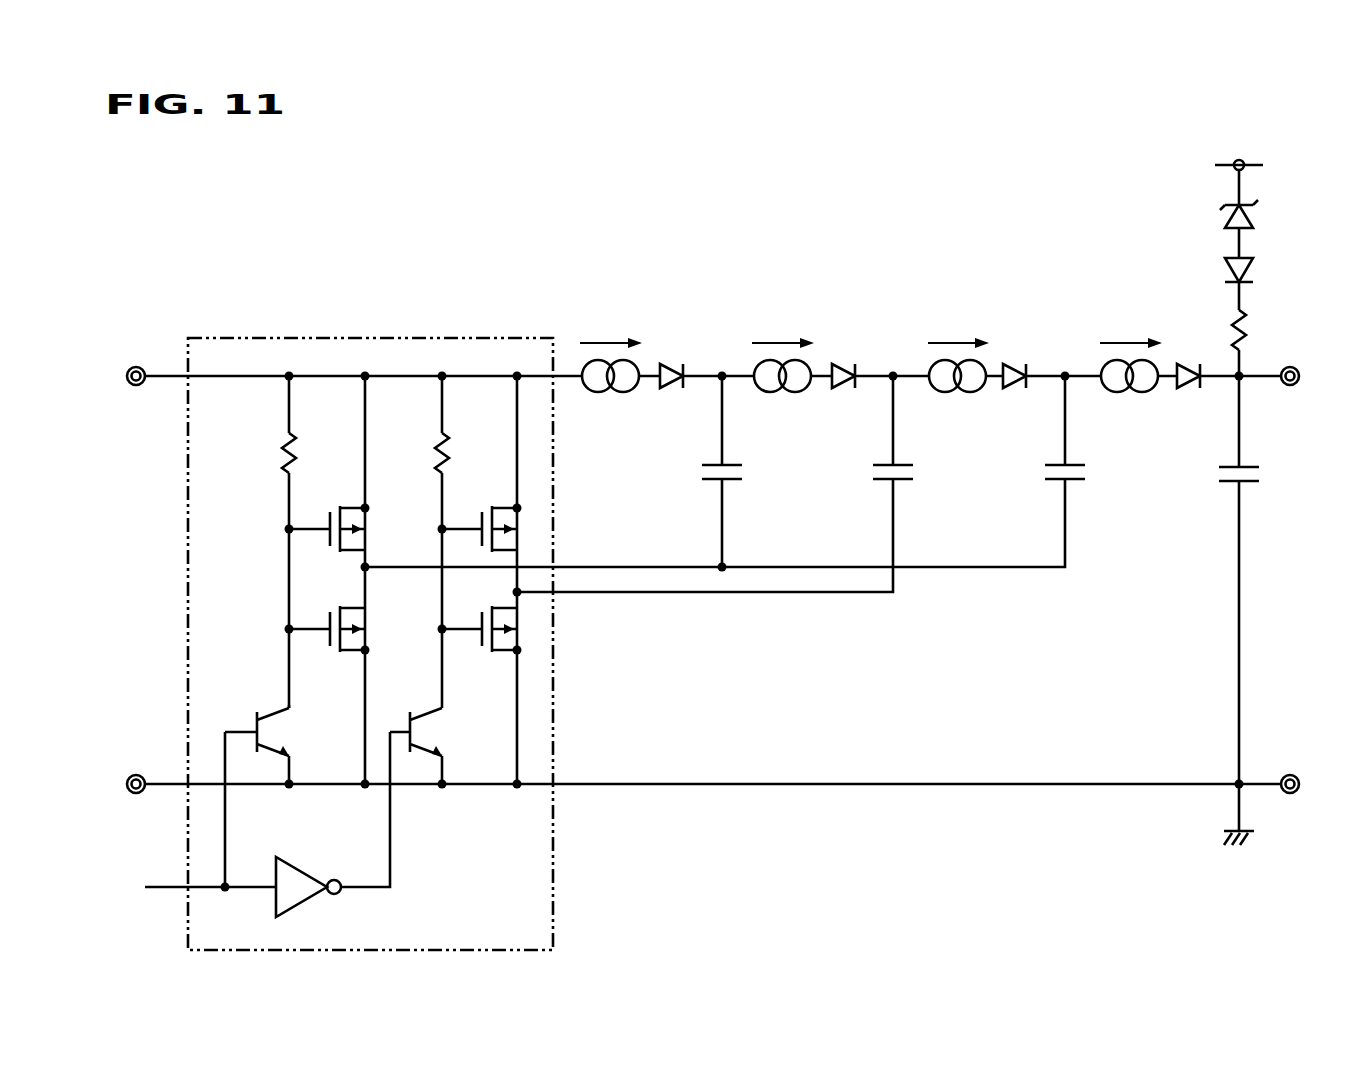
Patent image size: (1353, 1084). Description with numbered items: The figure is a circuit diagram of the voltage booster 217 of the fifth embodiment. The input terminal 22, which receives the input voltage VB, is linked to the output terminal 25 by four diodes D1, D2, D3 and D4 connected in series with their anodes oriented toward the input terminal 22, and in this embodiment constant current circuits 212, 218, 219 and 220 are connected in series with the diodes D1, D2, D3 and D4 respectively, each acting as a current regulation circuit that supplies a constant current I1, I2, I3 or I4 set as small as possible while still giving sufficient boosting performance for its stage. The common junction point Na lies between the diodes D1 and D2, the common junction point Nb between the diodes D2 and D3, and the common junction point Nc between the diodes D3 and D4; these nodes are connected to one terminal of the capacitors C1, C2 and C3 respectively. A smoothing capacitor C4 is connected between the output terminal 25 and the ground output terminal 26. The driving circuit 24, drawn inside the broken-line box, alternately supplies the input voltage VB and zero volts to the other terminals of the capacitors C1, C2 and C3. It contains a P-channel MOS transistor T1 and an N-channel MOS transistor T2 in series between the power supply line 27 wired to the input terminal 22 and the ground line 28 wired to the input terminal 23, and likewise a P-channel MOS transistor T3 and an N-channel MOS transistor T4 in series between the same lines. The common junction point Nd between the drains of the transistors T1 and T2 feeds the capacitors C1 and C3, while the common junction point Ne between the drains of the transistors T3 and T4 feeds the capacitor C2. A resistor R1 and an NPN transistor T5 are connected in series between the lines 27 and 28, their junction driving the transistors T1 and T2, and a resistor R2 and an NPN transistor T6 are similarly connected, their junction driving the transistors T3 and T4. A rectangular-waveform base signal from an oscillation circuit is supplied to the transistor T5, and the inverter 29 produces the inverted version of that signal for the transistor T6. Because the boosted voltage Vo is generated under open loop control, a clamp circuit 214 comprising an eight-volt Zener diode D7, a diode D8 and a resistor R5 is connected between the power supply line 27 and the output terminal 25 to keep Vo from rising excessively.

The input terminal 22 is at (133, 366).
The power supply line 27 is at (167, 372).
The input terminal 23 is at (132, 774).
The power supply line (ground line) 28 is at (165, 780).
The driving circuit 24 is at (188, 572).
The inverter 29 is at (303, 862).
The voltage booster 217 is at (790, 265).
The constant current circuit 212 is at (623, 393).
The constant current circuit 218 is at (795, 393).
The constant current circuit 219 is at (970, 393).
The constant current circuit 220 is at (1142, 393).
The clamp circuit 214 is at (1200, 259).
The output terminal 25 is at (1297, 388).
The ground output terminal 26 is at (1289, 775).
The resistor R1 is at (282, 446).
The resistor R2 is at (435, 446).
The resistor R5 is at (1262, 325).
The P-channel MOS transistor T1 is at (336, 512).
The N-channel MOS transistor T2 is at (336, 612).
The P-channel MOS transistor T3 is at (481, 512).
The N-channel MOS transistor T4 is at (486, 612).
The NPN transistor T5 is at (283, 708).
The NPN transistor T6 is at (433, 708).
The common junction point Nd is at (370, 565).
The common junction point Ne is at (540, 610).
The common junction point Na is at (722, 370).
The common junction point Nb is at (893, 370).
The common junction point Nc is at (1062, 370).
The diode D1 is at (672, 364).
The diode D2 is at (844, 364).
The diode D3 is at (1014, 364).
The diode D4 is at (1189, 364).
The Zener diode D7 is at (1262, 212).
The diode D8 is at (1262, 268).
The capacitor C1 is at (728, 485).
The capacitor C2 is at (899, 485).
The capacitor C3 is at (1071, 485).
The smoothing capacitor C4 is at (1246, 485).
The constant current I1 is at (611, 326).
The constant current I2 is at (783, 326).
The constant current I3 is at (958, 326).
The constant current I4 is at (1131, 326).